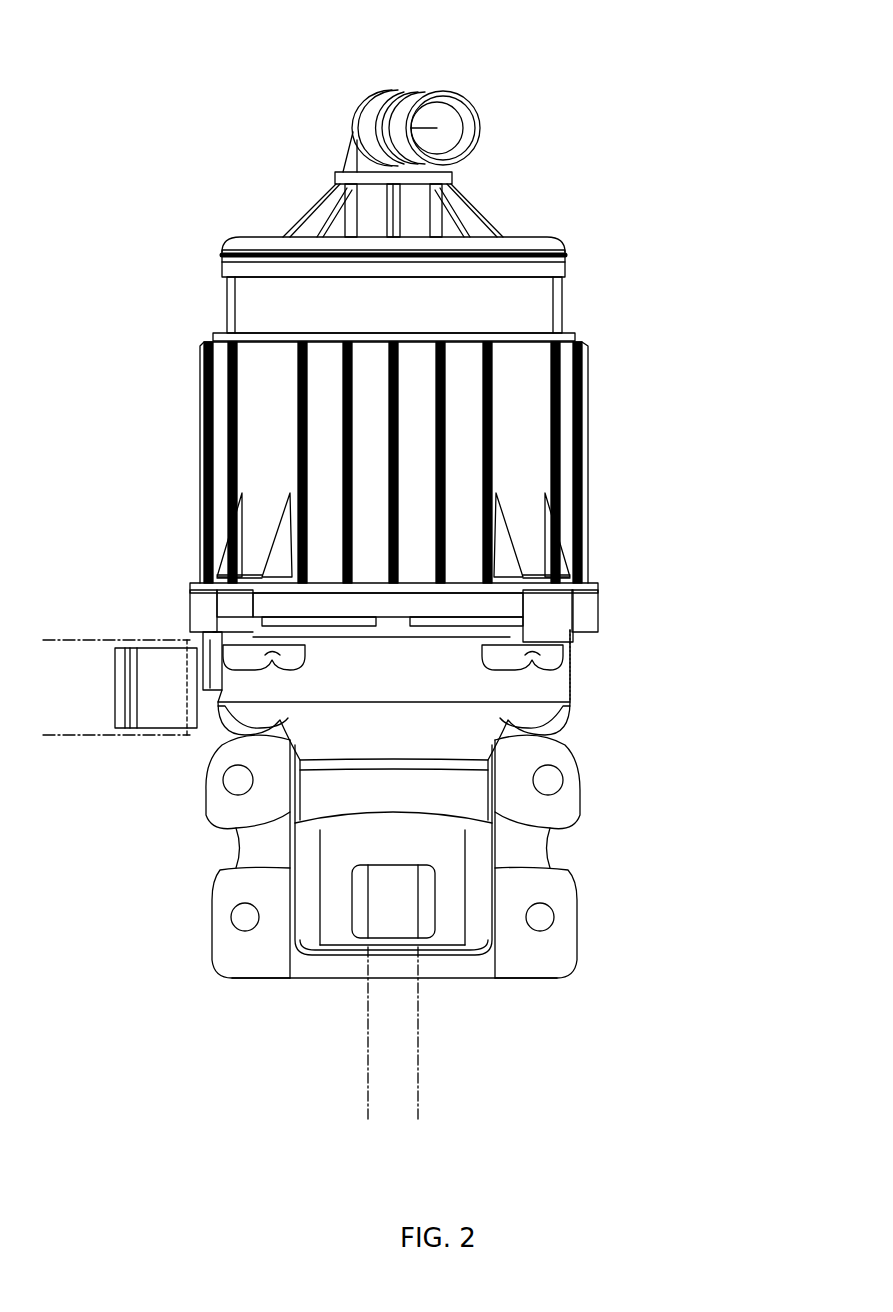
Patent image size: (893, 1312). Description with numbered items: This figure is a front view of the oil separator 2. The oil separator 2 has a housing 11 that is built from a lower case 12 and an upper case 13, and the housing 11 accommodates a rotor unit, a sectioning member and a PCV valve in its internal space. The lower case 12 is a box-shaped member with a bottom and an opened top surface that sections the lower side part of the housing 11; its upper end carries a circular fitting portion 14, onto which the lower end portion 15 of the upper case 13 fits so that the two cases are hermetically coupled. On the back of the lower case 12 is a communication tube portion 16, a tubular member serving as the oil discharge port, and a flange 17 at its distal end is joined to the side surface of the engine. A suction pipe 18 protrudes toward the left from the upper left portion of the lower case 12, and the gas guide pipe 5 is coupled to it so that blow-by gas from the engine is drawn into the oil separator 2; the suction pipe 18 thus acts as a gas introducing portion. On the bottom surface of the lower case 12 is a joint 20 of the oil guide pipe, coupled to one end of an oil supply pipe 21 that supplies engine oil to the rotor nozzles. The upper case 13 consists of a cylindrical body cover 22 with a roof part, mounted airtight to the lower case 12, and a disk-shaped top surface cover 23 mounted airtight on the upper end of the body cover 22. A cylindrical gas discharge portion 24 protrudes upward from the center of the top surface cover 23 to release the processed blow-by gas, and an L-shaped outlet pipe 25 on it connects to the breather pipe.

The oil separator 2 is at (612, 184).
The gas guide pipe 5 is at (85, 737).
The housing 11 is at (757, 370).
The lower case 12 is at (580, 680).
The upper case 13 is at (707, 337).
The circular fitting portion 14 is at (212, 661).
The lower end portion 15 is at (190, 593).
The communication tube portion 16 is at (497, 848).
The flange 17 is at (523, 978).
The suction pipe 18 is at (162, 730).
The joint 20 is at (387, 908).
The oil supply pipe 21 is at (417, 1068).
The body cover 22 is at (590, 420).
The top surface cover 23 is at (486, 214).
The gas discharge portion 24 is at (365, 215).
The outlet pipe 25 is at (447, 90).